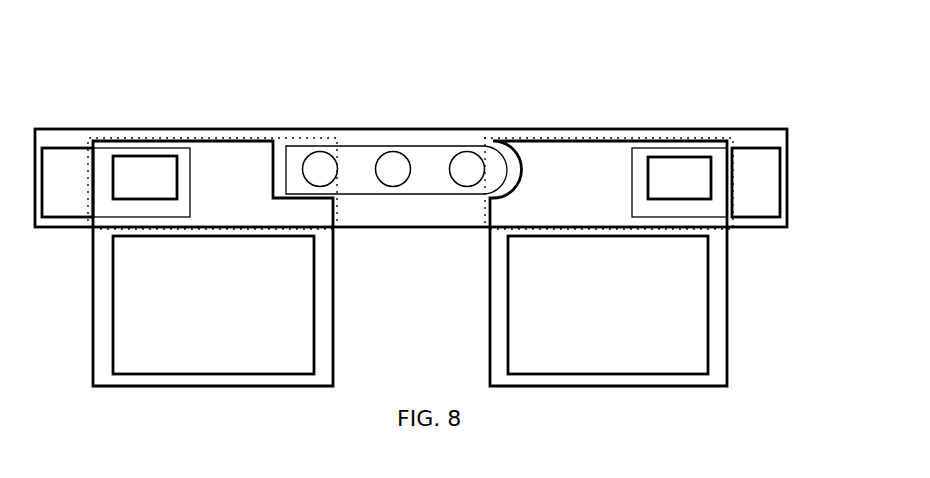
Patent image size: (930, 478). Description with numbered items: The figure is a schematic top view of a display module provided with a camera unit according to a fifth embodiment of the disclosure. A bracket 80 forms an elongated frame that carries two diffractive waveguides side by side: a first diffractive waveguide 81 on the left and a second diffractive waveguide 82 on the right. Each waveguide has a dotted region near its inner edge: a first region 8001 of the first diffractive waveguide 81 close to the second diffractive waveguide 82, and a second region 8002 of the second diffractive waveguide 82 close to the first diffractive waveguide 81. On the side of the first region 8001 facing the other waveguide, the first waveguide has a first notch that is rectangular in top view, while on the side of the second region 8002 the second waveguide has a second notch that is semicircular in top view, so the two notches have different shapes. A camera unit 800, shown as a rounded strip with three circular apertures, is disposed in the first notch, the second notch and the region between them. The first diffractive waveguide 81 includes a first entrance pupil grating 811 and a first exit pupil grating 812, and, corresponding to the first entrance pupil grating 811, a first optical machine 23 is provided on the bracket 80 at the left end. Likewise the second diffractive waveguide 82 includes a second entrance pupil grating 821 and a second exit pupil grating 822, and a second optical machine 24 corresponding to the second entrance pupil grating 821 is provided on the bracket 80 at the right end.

The bracket 80 is at (433, 129).
The camera unit 800 is at (347, 146).
The first diffractive waveguide 81 is at (232, 140).
The first entrance pupil grating 811 is at (145, 156).
The first exit pupil grating 812 is at (316, 266).
The second diffractive waveguide 82 is at (592, 141).
The second entrance pupil grating 821 is at (661, 157).
The second exit pupil grating 822 is at (507, 267).
The first optical machine 23 is at (67, 148).
The second optical machine 24 is at (740, 148).
The first region 8001 is at (86, 208).
The second region 8002 is at (735, 205).